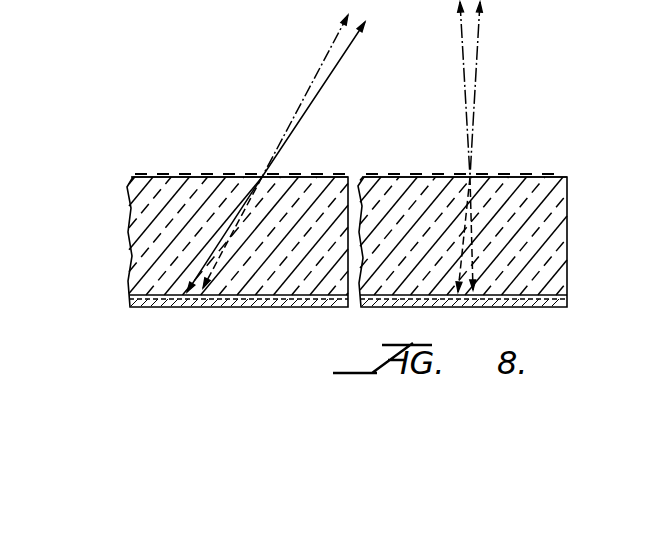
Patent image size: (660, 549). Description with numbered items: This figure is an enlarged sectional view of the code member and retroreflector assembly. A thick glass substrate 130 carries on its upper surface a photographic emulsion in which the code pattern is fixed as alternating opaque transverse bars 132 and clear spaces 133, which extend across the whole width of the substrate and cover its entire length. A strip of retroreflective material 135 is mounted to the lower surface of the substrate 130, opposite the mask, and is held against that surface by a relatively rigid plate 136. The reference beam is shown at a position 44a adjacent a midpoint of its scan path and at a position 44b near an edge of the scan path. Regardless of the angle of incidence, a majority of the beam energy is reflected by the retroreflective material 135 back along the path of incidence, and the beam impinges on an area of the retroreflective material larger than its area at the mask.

The glass substrate 130 is at (567, 233).
The opaque transverse bar 132 is at (455, 176).
The clear space 133 is at (474, 176).
The retroreflective material 135 is at (548, 300).
The rigid plate 136 is at (567, 307).
The reference beam position adjacent midpoint of scan path 44a is at (478, 53).
The reference beam position near edge of scan path 44b is at (311, 88).